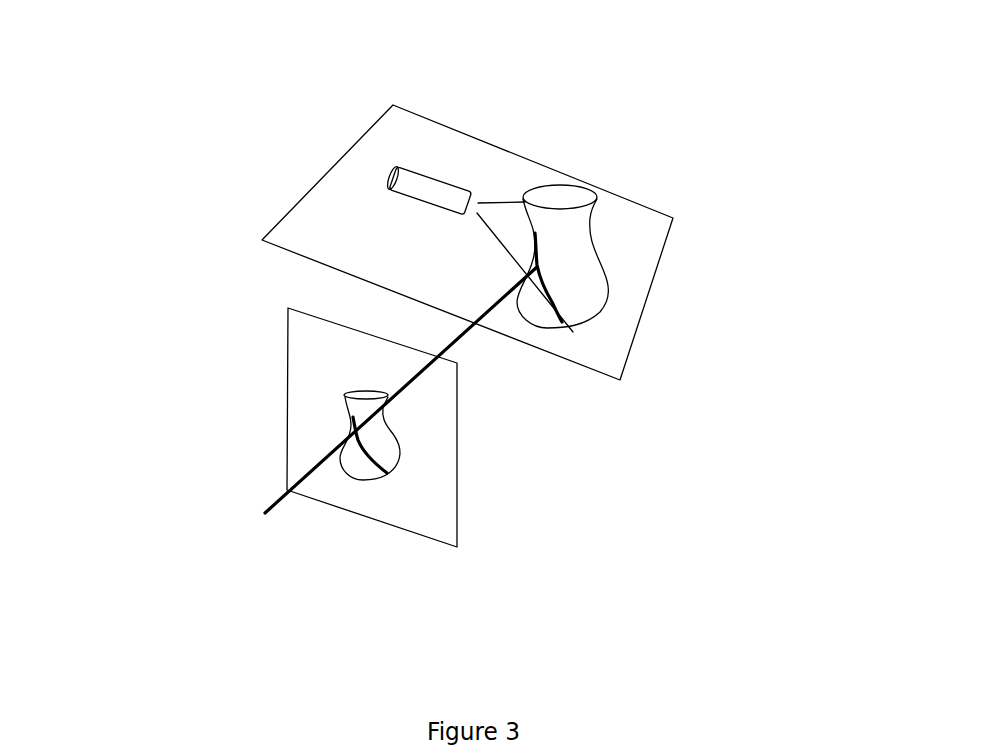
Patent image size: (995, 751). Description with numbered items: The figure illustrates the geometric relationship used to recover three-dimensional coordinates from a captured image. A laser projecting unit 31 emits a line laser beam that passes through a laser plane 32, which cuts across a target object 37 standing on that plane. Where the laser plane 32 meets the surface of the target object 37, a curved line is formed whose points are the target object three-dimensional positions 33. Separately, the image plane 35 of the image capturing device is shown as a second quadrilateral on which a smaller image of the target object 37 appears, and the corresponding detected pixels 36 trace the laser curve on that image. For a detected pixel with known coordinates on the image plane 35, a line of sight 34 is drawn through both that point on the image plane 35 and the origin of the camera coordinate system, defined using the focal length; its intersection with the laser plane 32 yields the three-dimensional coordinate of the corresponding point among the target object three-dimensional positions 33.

The laser projecting unit 31 is at (409, 153).
The laser plane 32 is at (669, 191).
The target object 3D positions 33 is at (565, 282).
The line of sight 34 is at (471, 350).
The image plane 35 is at (402, 550).
The detected pixels 36 is at (334, 439).
The target object 37 is at (579, 161).